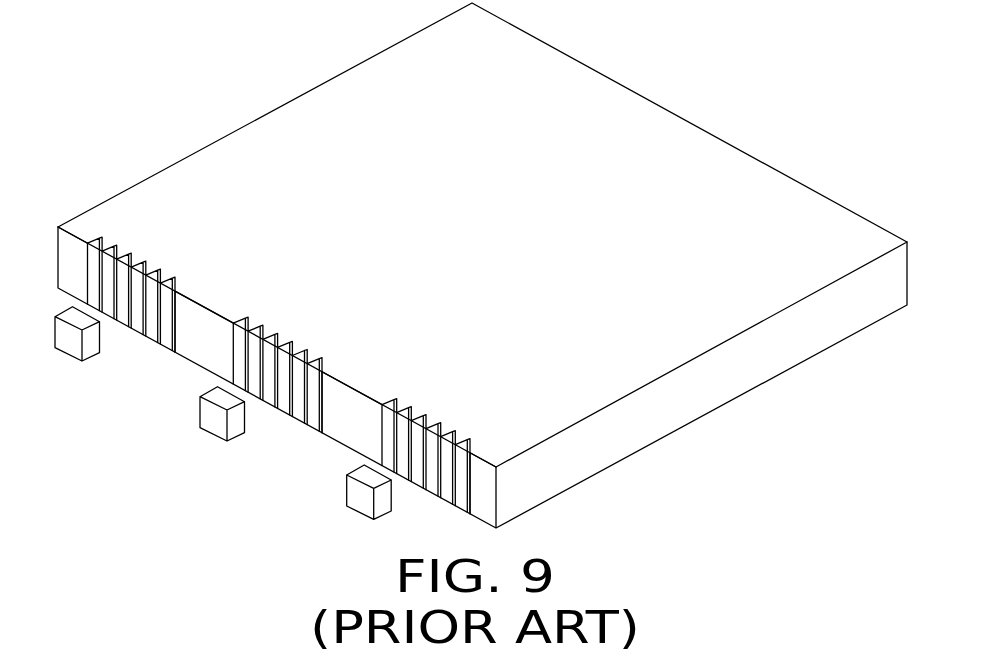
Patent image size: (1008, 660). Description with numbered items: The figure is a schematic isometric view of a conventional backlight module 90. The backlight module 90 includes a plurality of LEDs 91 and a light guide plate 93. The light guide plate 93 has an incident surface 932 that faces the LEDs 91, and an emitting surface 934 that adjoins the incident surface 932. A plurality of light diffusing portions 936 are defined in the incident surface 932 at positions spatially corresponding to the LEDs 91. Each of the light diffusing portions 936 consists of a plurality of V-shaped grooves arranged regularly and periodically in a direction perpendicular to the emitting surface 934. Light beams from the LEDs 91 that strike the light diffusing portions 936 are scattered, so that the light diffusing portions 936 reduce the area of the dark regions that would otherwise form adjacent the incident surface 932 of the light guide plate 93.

The backlight module 90 is at (318, 42).
The LEDs 91 is at (72, 342).
The light guide plate 93 is at (189, 138).
The incident surface 932 is at (352, 423).
The emitting surface 934 is at (628, 135).
The light diffusing portions 936 is at (128, 331).